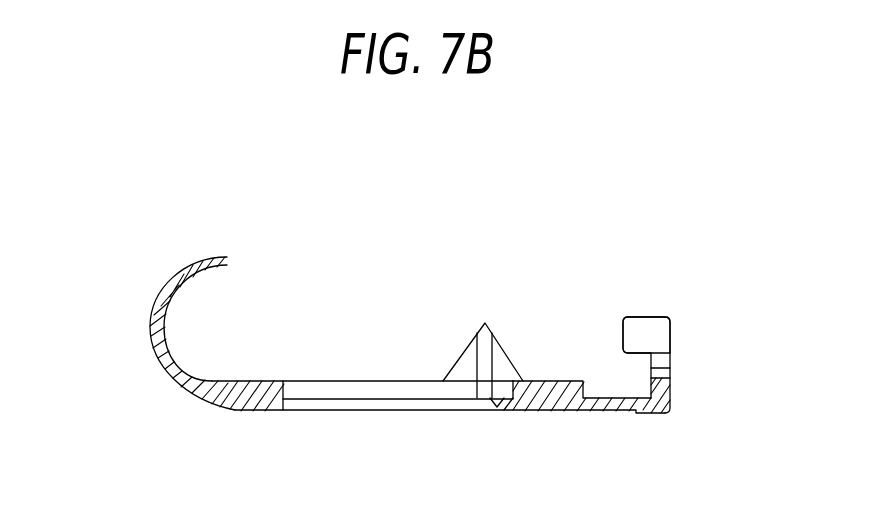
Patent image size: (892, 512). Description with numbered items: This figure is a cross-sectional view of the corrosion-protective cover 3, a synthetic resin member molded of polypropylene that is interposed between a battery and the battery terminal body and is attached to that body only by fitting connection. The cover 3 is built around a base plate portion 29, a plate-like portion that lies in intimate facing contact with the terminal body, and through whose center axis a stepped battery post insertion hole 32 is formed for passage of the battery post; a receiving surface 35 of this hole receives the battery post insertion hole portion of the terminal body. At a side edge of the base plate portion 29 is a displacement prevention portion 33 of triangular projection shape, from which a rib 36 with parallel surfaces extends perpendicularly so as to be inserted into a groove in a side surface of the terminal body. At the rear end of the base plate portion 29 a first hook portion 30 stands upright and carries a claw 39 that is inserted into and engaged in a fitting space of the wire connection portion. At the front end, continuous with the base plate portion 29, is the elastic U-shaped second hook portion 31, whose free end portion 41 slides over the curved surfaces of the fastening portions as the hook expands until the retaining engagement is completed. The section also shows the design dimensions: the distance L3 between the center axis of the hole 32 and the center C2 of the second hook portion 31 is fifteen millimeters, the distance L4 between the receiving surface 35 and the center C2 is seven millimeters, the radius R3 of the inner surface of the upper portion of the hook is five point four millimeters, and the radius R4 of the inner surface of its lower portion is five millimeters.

The corrosion-protective cover 3 is at (491, 312).
The base plate portion 29 is at (532, 412).
The first hook portion 30 is at (688, 327).
The second hook portion 31 is at (192, 327).
The battery post insertion hole 32 is at (353, 388).
The displacement prevention portion 33 is at (507, 352).
The receiving surface 35 is at (279, 381).
The rib 36 is at (477, 355).
The claw 39 is at (648, 328).
The free end portion 41 is at (228, 261).
The center of the second hook portion C2 is at (227, 327).
The radius of curvature of inner surface of upper portion of second hook portion R3 is at (227, 327).
The radius of inner surface of lower portion of second hook portion R4 is at (227, 327).
The distance between center axis of battery post insertion hole and center C2 L3 is at (389, 202).
The distance between receiving surface and center C2 L4 is at (70, 327).